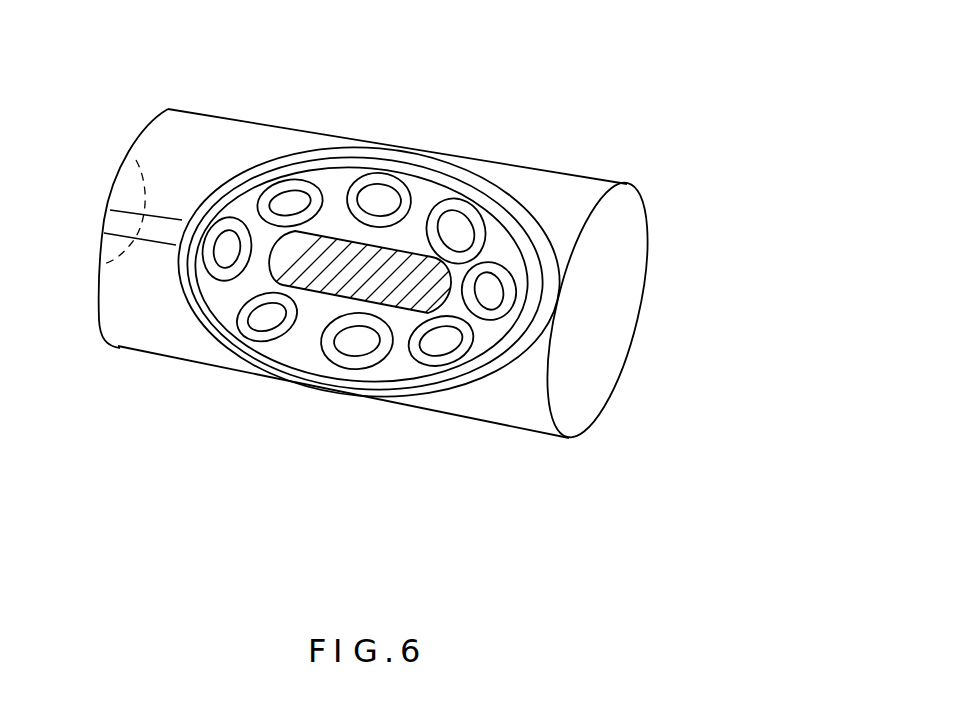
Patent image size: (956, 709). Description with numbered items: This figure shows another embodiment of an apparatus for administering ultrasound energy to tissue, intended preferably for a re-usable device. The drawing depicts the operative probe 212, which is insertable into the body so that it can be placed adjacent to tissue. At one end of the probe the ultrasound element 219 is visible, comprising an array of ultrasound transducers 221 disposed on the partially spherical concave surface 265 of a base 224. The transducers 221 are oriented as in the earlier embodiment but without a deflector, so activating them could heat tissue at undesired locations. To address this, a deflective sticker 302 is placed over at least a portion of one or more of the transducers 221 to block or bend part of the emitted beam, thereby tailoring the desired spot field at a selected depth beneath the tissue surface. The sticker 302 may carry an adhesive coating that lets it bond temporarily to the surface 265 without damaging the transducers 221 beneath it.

The operative probe 212 is at (660, 240).
The ultrasound element 219 is at (544, 233).
The base 224 is at (507, 353).
The partially spherical concave surface 265 is at (421, 198).
The ultrasound transducers 221 is at (380, 362).
The deflective sticker 302 is at (335, 224).